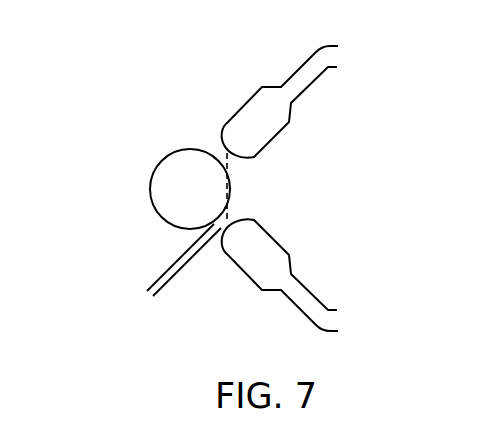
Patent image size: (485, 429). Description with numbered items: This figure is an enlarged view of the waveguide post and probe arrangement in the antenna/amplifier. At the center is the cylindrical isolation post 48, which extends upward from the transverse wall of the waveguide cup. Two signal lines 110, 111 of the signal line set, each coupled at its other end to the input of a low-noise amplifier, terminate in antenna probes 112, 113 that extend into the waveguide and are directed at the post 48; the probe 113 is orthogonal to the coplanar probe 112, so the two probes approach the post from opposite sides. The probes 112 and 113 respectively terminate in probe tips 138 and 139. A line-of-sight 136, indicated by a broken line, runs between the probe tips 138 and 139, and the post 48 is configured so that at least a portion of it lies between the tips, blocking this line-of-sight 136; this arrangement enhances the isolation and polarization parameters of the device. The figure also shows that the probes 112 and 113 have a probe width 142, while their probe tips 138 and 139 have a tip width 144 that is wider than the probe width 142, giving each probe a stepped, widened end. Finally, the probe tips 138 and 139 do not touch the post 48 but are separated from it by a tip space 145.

The isolation post 48 is at (150, 188).
The signal line 110 is at (333, 68).
The signal line 111 is at (329, 300).
The antenna probe 112 is at (280, 86).
The antenna probe 113 is at (280, 291).
The line-of-sight 136 is at (226, 188).
The probe tip 138 is at (220, 146).
The probe tip 139 is at (243, 216).
The probe width 142 is at (278, 45).
The probe tip width 144 is at (302, 150).
The tip space 145 is at (193, 315).